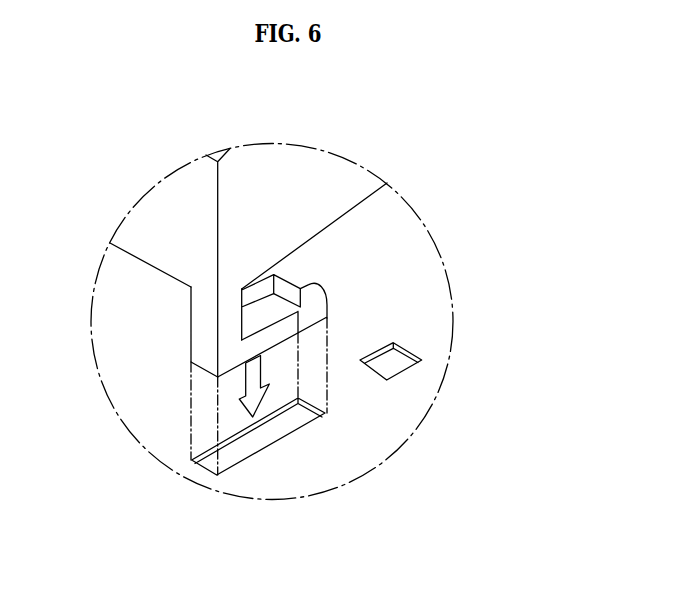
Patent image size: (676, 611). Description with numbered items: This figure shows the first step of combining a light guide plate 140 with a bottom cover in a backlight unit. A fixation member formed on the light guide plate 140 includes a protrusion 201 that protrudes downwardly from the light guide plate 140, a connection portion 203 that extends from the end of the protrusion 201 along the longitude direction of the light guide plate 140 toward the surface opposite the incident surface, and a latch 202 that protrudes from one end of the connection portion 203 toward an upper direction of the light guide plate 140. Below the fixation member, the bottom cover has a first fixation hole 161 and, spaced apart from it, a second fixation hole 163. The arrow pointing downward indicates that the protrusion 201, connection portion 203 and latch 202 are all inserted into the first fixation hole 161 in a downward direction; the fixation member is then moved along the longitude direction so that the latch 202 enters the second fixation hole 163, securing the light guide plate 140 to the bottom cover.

The light guide plate 140 is at (313, 163).
The protrusion 201 is at (223, 316).
The latch 202 is at (298, 284).
The connection portion 203 is at (270, 332).
The first fixation hole 161 is at (259, 437).
The second fixation hole 163 is at (388, 361).